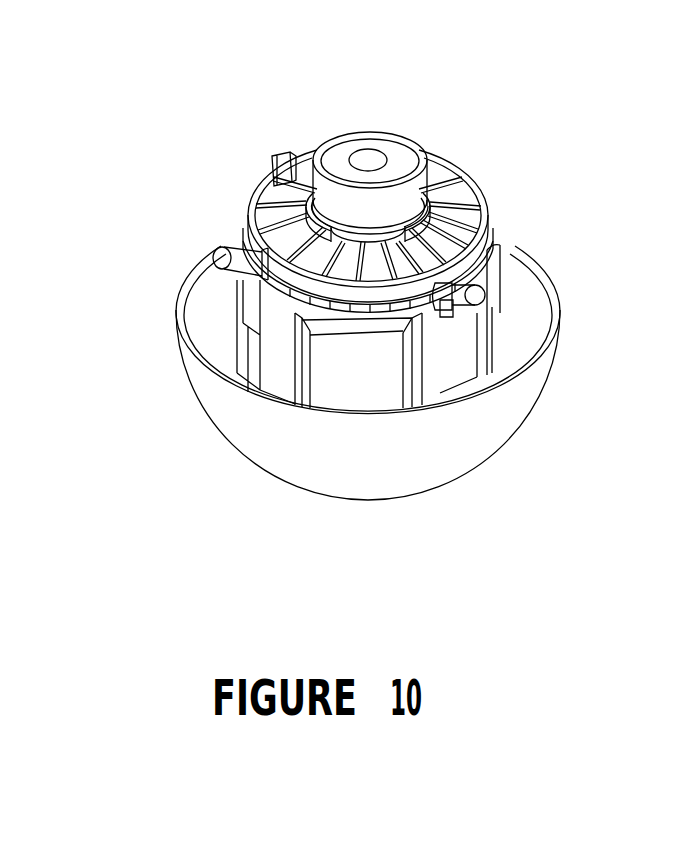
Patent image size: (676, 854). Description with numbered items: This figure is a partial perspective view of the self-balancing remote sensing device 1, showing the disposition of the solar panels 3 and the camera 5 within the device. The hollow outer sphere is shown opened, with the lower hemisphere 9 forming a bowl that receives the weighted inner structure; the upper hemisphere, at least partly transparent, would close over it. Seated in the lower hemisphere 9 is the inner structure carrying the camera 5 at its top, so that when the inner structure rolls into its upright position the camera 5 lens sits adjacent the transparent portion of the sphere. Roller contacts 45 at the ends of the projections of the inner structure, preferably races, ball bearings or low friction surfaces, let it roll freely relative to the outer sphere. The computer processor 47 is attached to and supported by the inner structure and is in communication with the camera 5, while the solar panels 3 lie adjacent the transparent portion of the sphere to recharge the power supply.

The self-balancing remote sensing device 1 is at (492, 128).
The solar panels 3 is at (288, 243).
The camera 5 is at (338, 157).
The lower hemisphere 9 is at (208, 400).
The roller contacts 45 is at (480, 298).
The computer processor 47 is at (375, 385).